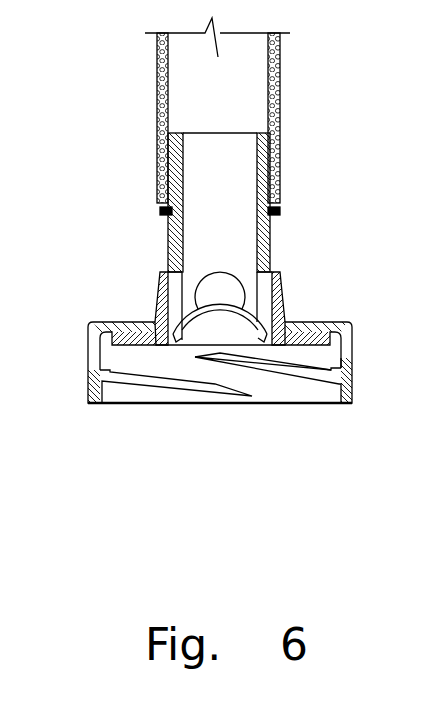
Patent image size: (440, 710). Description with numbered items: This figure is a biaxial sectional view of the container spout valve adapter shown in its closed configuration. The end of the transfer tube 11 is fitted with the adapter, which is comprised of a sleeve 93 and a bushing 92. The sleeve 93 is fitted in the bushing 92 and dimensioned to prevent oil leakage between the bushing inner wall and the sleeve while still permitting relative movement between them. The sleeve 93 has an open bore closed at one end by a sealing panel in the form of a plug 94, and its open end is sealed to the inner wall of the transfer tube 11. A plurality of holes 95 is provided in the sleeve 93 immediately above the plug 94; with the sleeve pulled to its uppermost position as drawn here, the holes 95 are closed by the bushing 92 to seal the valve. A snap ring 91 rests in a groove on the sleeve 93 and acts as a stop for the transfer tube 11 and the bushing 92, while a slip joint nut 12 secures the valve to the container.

The transfer tube 11 is at (155, 110).
The slip joint nut 12 is at (352, 345).
The snap ring 91 is at (162, 211).
The bushing 92 is at (157, 293).
The sleeve 93 is at (270, 259).
The plug 94 is at (196, 322).
The holes 95 is at (157, 288).